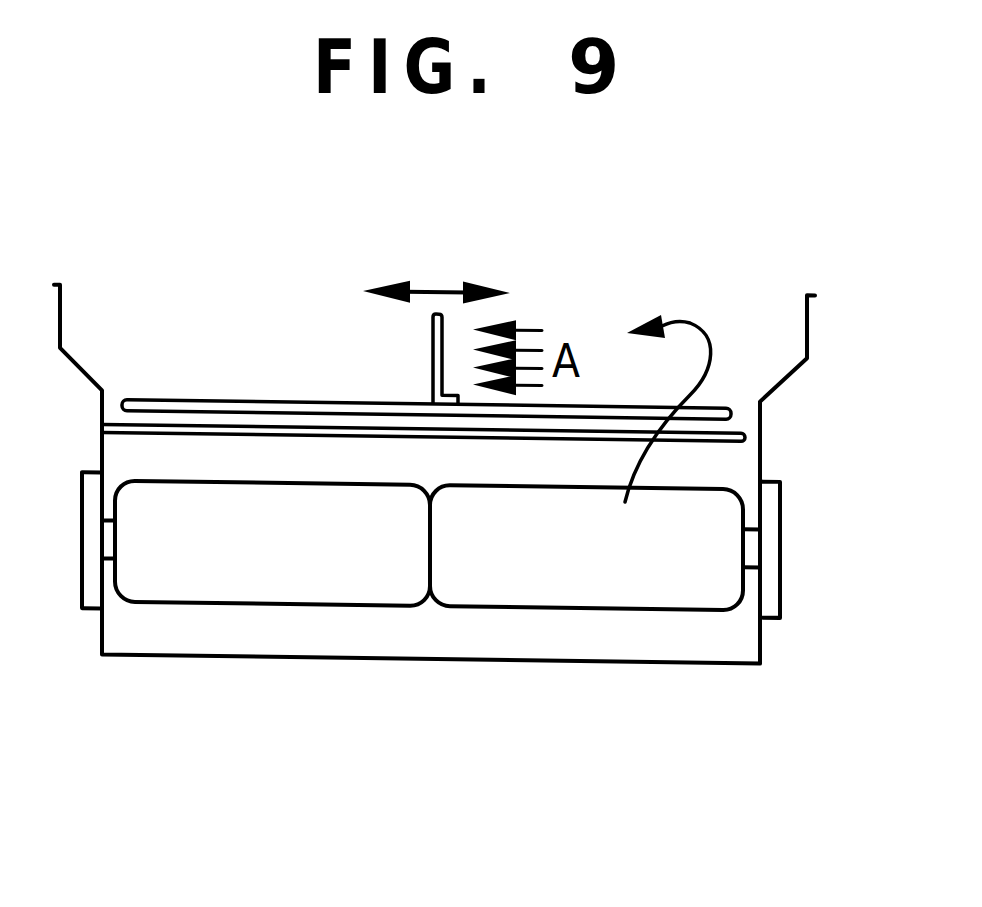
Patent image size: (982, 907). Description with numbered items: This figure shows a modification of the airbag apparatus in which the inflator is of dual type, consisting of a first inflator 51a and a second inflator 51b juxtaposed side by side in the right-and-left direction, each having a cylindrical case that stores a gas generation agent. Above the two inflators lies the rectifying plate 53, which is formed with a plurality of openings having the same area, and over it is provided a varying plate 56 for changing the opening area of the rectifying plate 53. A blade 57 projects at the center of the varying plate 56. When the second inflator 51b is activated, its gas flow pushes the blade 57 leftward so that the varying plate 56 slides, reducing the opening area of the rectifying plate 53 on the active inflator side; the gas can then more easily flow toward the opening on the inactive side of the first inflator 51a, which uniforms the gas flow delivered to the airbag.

The first inflator 51a is at (258, 605).
The second inflator 51b is at (605, 610).
The rectifying plate 53 is at (747, 437).
The varying plate 56 is at (733, 412).
The blade 57 is at (432, 358).